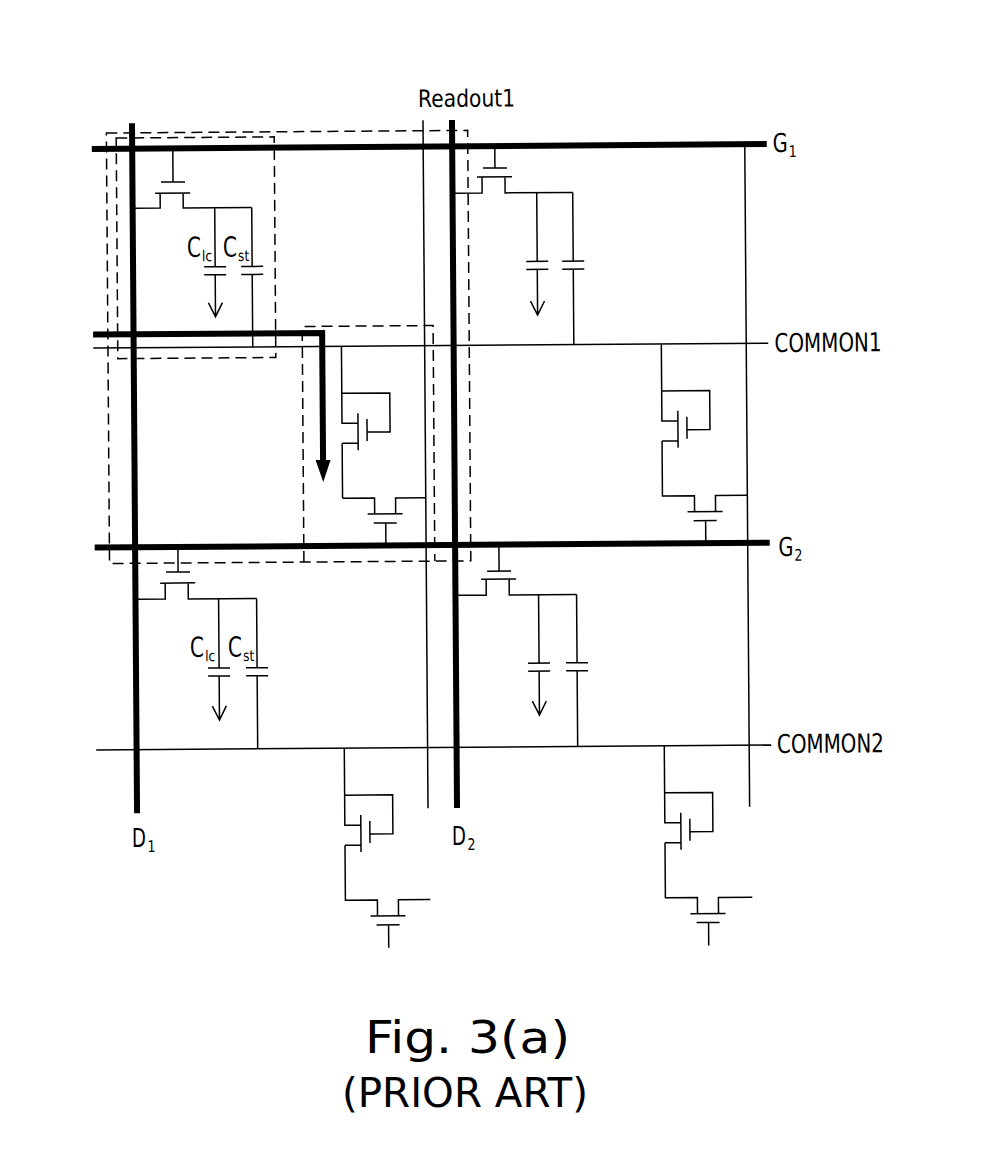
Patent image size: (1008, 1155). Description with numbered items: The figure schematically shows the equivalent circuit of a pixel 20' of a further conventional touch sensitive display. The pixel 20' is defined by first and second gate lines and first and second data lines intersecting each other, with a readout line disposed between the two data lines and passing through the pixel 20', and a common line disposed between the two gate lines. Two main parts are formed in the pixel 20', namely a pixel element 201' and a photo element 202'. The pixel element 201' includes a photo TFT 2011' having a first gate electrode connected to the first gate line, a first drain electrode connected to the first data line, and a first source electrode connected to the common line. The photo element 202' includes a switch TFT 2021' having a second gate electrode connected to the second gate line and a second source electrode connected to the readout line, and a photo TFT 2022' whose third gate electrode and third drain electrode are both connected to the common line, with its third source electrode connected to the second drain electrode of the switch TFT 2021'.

The pixel 20' is at (256, 347).
The pixel element 201' is at (212, 218).
The photo TFT 2011' is at (186, 132).
The photo element 202' is at (367, 288).
The photo TFT 2022' is at (447, 422).
The switch TFT 2021' is at (456, 511).